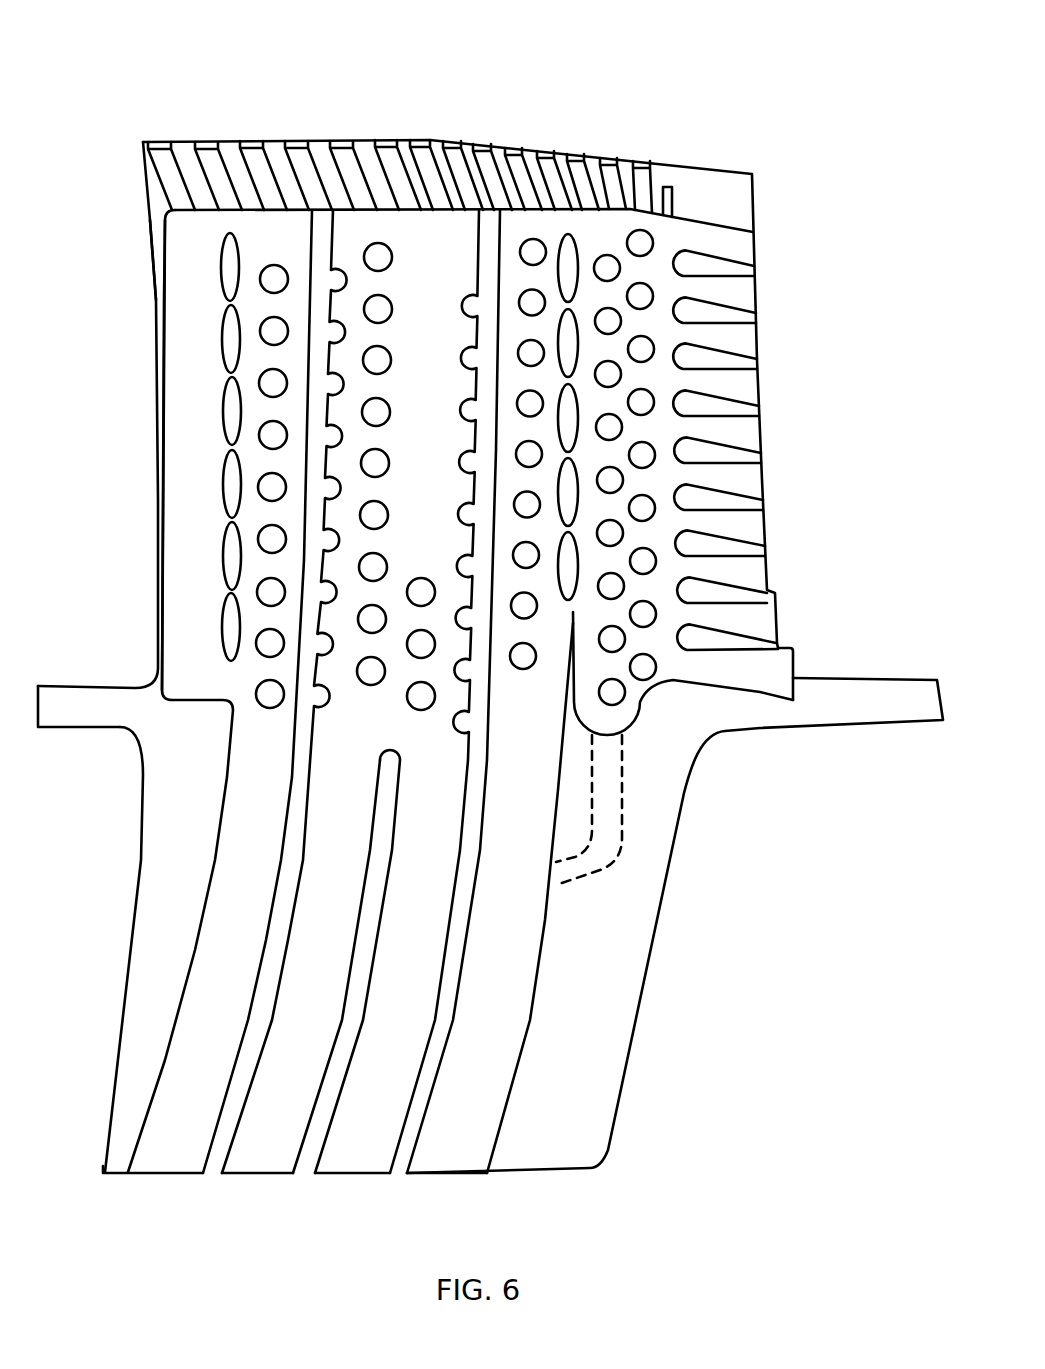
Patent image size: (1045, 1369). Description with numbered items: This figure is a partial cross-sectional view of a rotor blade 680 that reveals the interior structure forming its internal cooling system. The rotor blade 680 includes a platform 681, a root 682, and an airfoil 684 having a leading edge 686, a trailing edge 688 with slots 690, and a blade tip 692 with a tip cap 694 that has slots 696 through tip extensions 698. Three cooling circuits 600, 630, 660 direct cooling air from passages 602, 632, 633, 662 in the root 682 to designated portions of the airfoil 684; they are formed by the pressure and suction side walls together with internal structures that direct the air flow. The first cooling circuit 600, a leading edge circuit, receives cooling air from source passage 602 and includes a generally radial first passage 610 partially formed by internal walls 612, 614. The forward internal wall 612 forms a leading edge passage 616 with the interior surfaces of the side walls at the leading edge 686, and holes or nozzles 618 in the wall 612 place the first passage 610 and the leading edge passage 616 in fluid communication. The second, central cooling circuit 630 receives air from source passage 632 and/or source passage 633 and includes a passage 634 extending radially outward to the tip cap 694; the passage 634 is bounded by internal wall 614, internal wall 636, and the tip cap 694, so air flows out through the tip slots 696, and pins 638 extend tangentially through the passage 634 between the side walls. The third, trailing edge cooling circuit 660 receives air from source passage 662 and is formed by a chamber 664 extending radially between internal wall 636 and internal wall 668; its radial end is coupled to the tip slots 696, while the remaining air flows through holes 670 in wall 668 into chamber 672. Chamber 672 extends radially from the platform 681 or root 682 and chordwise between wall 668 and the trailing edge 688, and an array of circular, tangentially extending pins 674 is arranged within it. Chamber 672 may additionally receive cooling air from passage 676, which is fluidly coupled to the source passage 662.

The first cooling circuit 600 is at (224, 691).
The source passage 602 is at (130, 1158).
The first passage 610 is at (252, 453).
The leading internal wall 612 is at (216, 664).
The internal wall 614 is at (320, 287).
The leading edge passage 616 is at (164, 390).
The holes 618 is at (230, 380).
The second cooling circuit 630 is at (322, 749).
The source passage 632 is at (262, 1177).
The source passage 633 is at (352, 1177).
The passage 634 is at (406, 460).
The internal wall 636 is at (478, 290).
The pins 638 is at (378, 413).
The third cooling circuit 660 is at (661, 690).
The source passage 662 is at (449, 1177).
The first passage 664 is at (530, 383).
The internal wall 668 is at (583, 265).
The holes 670 is at (574, 610).
The chamber 672 is at (636, 720).
The pins 674 is at (650, 672).
The passage 676 is at (590, 878).
The rotor blade 680 is at (856, 125).
The platform 681 is at (97, 688).
The root 682 is at (146, 822).
The airfoil 684 is at (150, 456).
The leading edge 686 is at (156, 298).
The trailing edge 688 is at (755, 275).
The slots 690 is at (755, 311).
The blade tip 692 is at (574, 126).
The tip cap 694 is at (202, 200).
The slots 696 is at (345, 160).
The tip extensions 698 is at (492, 148).